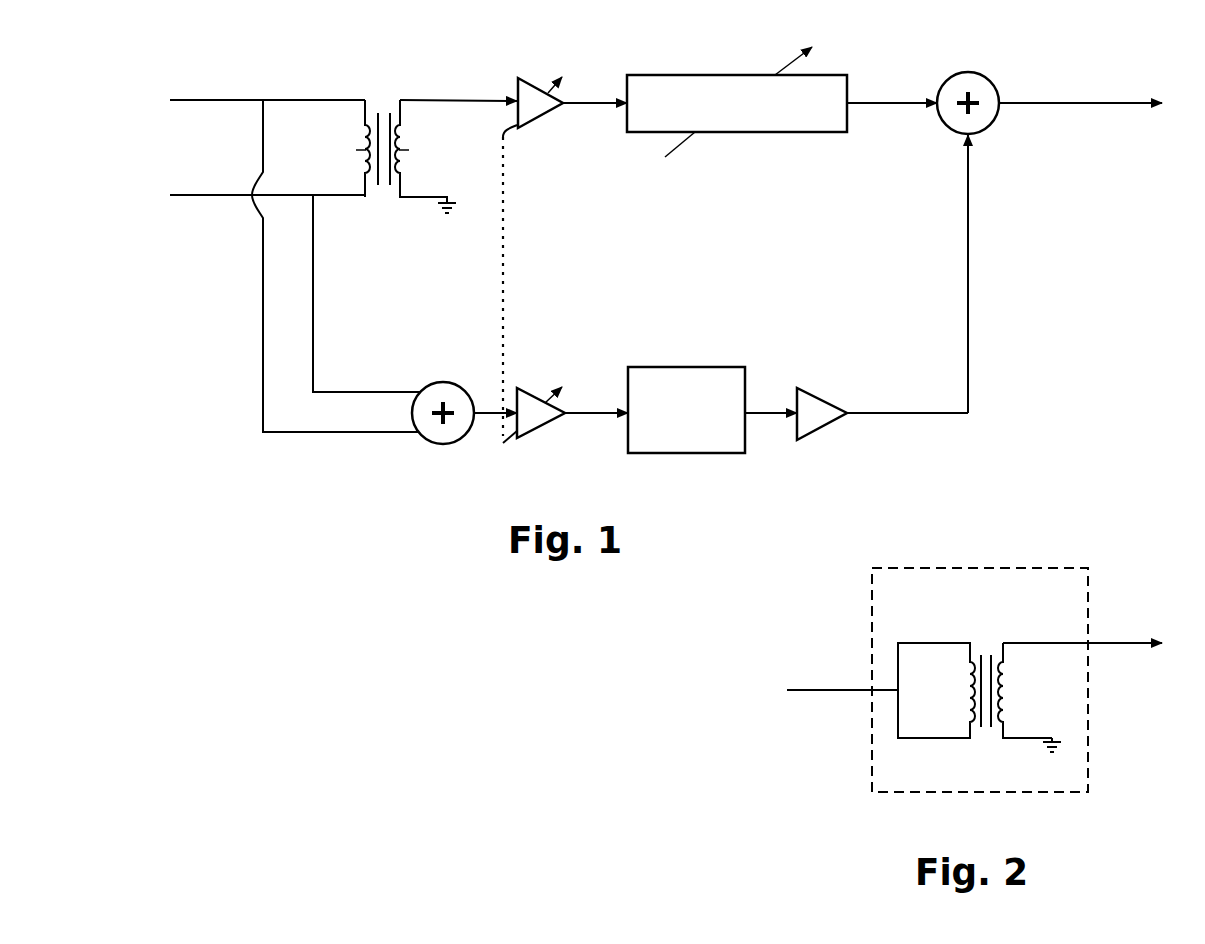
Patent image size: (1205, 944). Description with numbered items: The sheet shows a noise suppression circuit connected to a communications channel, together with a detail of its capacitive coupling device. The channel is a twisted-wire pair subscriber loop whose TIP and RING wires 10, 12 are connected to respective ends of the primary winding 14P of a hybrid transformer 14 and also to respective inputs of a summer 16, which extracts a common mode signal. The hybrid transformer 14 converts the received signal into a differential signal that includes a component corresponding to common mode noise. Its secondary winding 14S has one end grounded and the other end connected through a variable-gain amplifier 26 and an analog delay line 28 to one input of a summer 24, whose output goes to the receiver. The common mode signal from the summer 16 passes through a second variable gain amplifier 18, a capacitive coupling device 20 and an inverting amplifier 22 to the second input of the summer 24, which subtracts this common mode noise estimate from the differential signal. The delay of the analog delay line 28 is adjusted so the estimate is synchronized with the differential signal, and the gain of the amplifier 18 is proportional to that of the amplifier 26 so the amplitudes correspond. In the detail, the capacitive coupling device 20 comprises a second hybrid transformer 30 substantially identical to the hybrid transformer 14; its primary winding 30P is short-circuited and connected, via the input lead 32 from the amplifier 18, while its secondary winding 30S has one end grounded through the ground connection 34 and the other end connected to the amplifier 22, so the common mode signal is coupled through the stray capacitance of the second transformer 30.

In FIG. 1, the TIP wire 10 is at (210, 100).
In FIG. 1, the RING wire 12 is at (232, 197).
In FIG. 1, the hybrid transformer 14 is at (382, 111).
In FIG. 1, the primary winding 14P is at (368, 132).
In FIG. 1, the secondary winding 14S is at (398, 132).
In FIG. 1, the summer 16 is at (462, 383).
In FIG. 1, the second variable gain amplifier 18 is at (530, 393).
In FIG. 1, the capacitive coupling device 20 is at (698, 367).
In FIG. 2, the capacitive coupling device 20 is at (1017, 553).
In FIG. 1, the inverting amplifier 22 is at (830, 406).
In FIG. 1, the summer 24 is at (980, 73).
In FIG. 1, the variable-gain amplifier 26 is at (537, 80).
In FIG. 1, the analog delay line 28 is at (728, 76).
In FIG. 2, the second hybrid transformer 30 is at (1030, 658).
In FIG. 2, the primary winding 30P is at (972, 677).
In FIG. 2, the secondary winding 30S is at (1003, 677).
In FIG. 2, the input lead from amplifier 18 32 is at (872, 672).
In FIG. 2, the ground connection 34 is at (1050, 742).